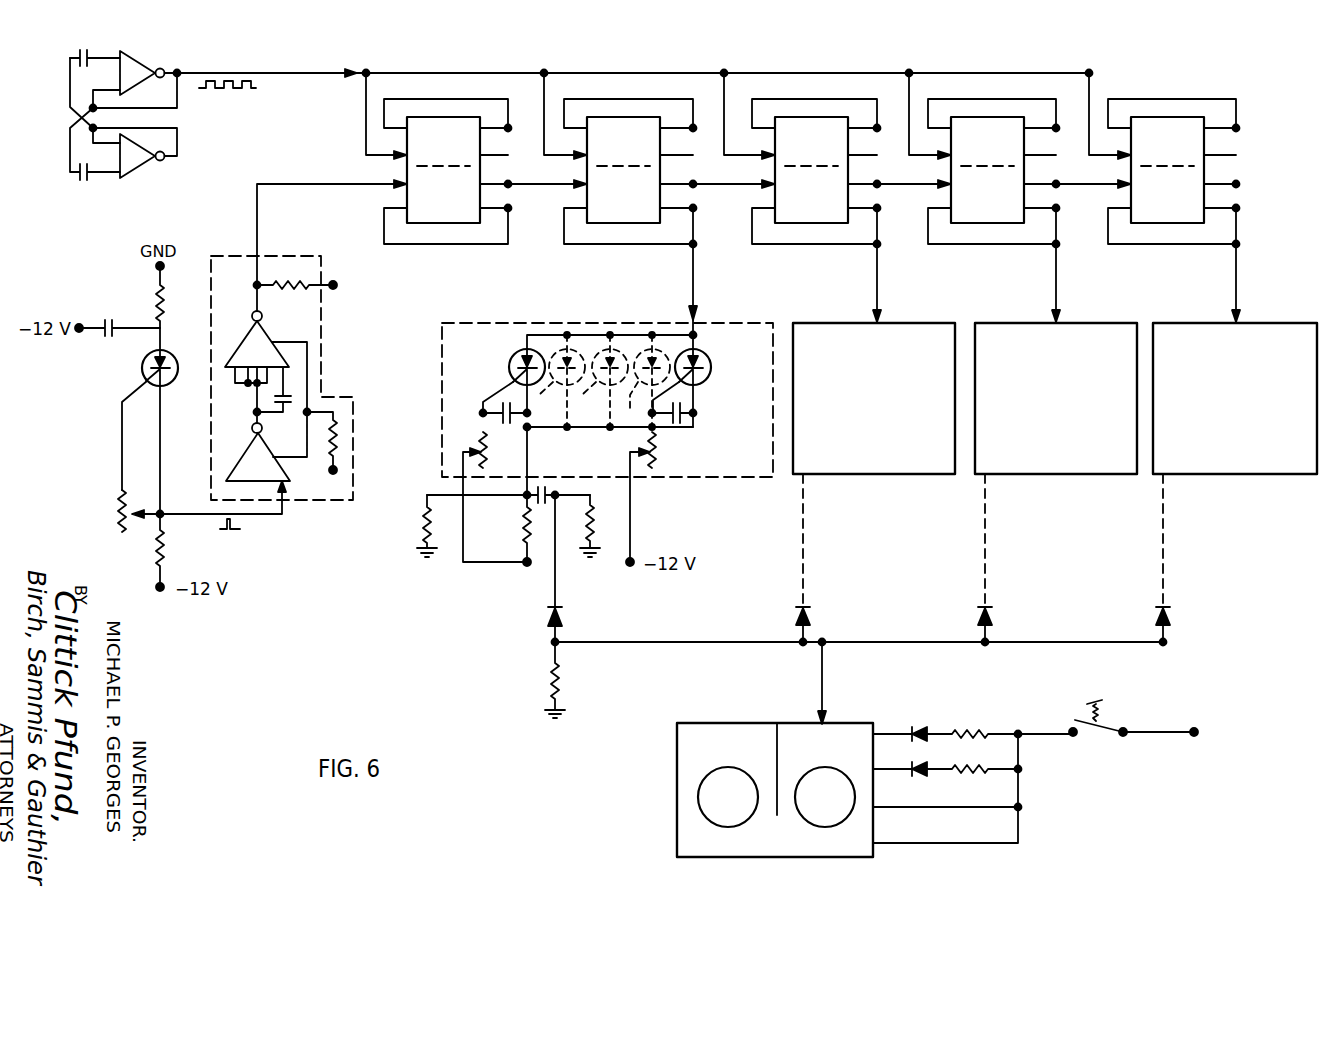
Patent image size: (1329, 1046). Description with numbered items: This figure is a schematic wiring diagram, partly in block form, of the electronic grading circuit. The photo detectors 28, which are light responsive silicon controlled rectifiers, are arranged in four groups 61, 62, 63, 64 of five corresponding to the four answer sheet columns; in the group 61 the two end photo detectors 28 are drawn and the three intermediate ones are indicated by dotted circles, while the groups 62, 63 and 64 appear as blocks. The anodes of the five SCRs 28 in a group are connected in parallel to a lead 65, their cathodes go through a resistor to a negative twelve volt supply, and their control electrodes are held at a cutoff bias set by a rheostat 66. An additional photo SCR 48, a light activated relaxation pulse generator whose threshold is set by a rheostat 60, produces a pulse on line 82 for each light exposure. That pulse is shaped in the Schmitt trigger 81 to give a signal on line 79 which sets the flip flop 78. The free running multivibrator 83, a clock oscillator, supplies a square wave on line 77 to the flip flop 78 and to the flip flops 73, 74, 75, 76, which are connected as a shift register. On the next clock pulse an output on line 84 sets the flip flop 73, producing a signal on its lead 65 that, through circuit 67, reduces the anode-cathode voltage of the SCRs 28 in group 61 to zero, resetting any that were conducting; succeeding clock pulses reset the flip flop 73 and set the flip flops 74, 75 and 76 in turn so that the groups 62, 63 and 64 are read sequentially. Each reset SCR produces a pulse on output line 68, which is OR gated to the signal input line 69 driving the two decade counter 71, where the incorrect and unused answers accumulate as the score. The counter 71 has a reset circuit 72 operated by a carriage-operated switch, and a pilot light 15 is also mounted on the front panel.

The free running multivibrator 83 is at (68, 90).
The clock signal line 77 is at (299, 70).
The pulse line 79 is at (299, 170).
The flip flop 78 is at (431, 200).
The output line 84 is at (536, 178).
The flip flop 73 is at (611, 200).
The flip flop 74 is at (799, 200).
The flip flop 75 is at (975, 200).
The flip flop 76 is at (1155, 200).
The lead 65 is at (688, 292).
The photo detector group 61 is at (583, 320).
The photo detector 28 is at (510, 356).
The photo detector group 62 is at (834, 318).
The photo detector group 63 is at (1017, 318).
The photo detector group 64 is at (1191, 318).
The photo SCR pulse generator 48 is at (144, 354).
The Schmitt trigger 81 is at (323, 336).
The pulse output line 82 is at (195, 498).
The rheostat 60 is at (120, 528).
The rheostat 66 is at (467, 440).
The reset circuit 67 is at (515, 531).
The output line 68 is at (558, 564).
The signal input line 69 is at (826, 694).
The two decade counter 71 is at (759, 721).
The reset circuit 72 is at (1020, 758).
The pilot light 15 is at (1111, 722).